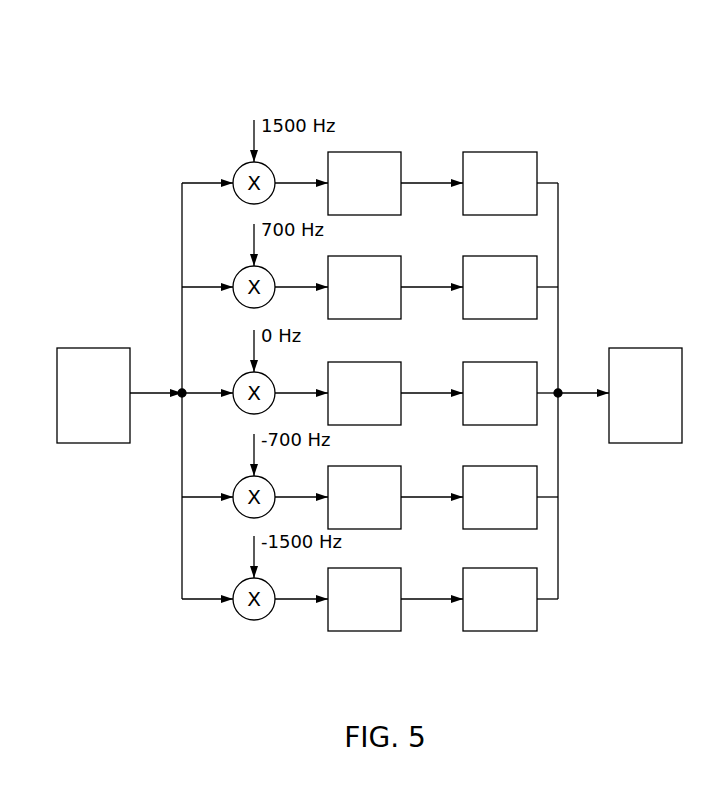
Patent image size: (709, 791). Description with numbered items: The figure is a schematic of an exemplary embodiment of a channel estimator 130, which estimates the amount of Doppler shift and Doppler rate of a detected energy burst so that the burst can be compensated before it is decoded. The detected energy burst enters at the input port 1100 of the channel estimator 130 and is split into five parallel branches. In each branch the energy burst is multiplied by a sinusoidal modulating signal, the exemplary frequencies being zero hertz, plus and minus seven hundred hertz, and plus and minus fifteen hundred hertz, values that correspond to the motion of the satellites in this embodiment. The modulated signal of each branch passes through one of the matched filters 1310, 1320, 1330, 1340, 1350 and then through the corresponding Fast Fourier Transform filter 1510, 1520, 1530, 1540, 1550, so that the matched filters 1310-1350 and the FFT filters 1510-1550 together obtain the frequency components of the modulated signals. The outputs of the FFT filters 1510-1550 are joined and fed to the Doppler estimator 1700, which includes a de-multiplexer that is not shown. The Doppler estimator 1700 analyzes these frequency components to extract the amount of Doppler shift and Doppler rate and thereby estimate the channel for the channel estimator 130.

The channel estimator 130 is at (400, 40).
The input port 1100 is at (93, 395).
The matched filter 1310 is at (364, 183).
The matched filter 1320 is at (364, 287).
The matched filter 1330 is at (364, 393).
The matched filter 1340 is at (364, 497).
The matched filter 1350 is at (364, 599).
The Fast Fourier Transform filter 1510 is at (500, 183).
The Fast Fourier Transform filter 1520 is at (500, 287).
The Fast Fourier Transform filter 1530 is at (500, 393).
The Fast Fourier Transform filter 1540 is at (500, 497).
The Fast Fourier Transform filter 1550 is at (500, 599).
The Doppler estimator 1700 is at (645, 395).